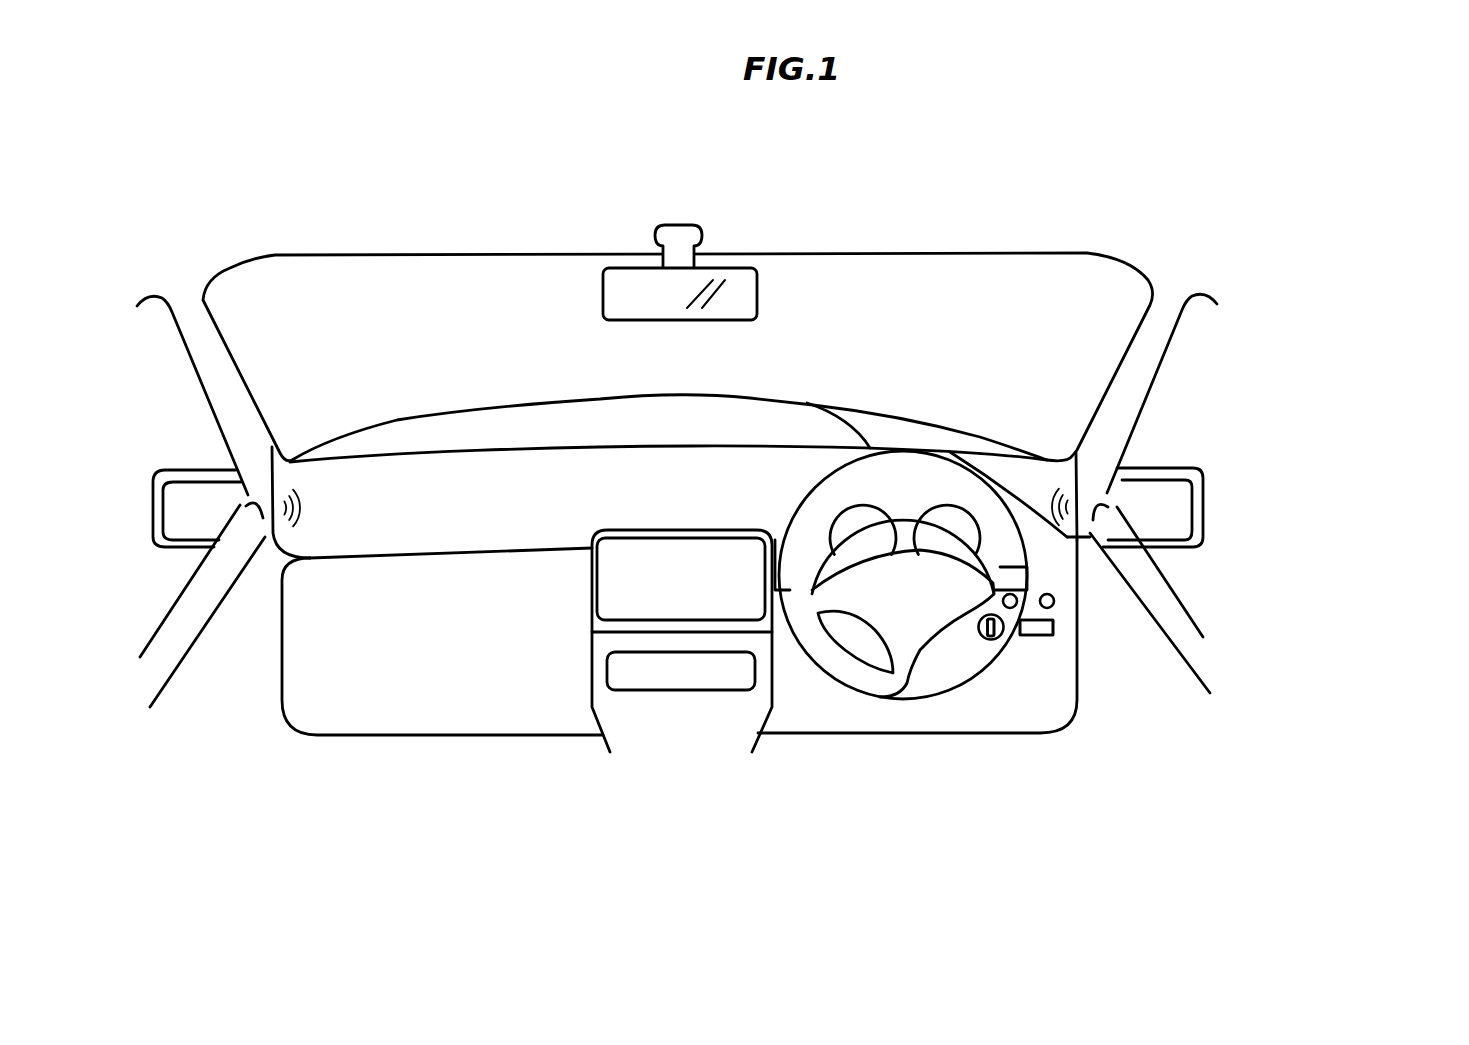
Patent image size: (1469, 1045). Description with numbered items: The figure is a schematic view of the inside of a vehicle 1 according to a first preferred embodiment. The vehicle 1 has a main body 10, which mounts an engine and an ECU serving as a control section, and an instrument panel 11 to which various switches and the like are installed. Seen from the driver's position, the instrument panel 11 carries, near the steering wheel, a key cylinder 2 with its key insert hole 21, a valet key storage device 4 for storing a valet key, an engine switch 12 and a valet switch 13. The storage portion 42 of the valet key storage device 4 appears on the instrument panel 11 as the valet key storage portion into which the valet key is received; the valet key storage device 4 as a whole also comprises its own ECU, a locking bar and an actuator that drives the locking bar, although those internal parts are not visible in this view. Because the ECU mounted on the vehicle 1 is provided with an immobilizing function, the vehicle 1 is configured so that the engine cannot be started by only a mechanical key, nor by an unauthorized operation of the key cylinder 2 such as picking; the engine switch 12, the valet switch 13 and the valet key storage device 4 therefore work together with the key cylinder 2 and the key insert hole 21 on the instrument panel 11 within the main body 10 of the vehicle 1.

The vehicle 1 is at (874, 236).
The main body 10 is at (1130, 397).
The instrument panel 11 is at (786, 721).
The key cylinder 2 is at (986, 638).
The key insert hole 21 is at (996, 639).
The engine switch 12 is at (1015, 597).
The valet switch 13 is at (1053, 597).
The storage portion 42 is at (1053, 622).
The valet key storage device 4 is at (1041, 640).